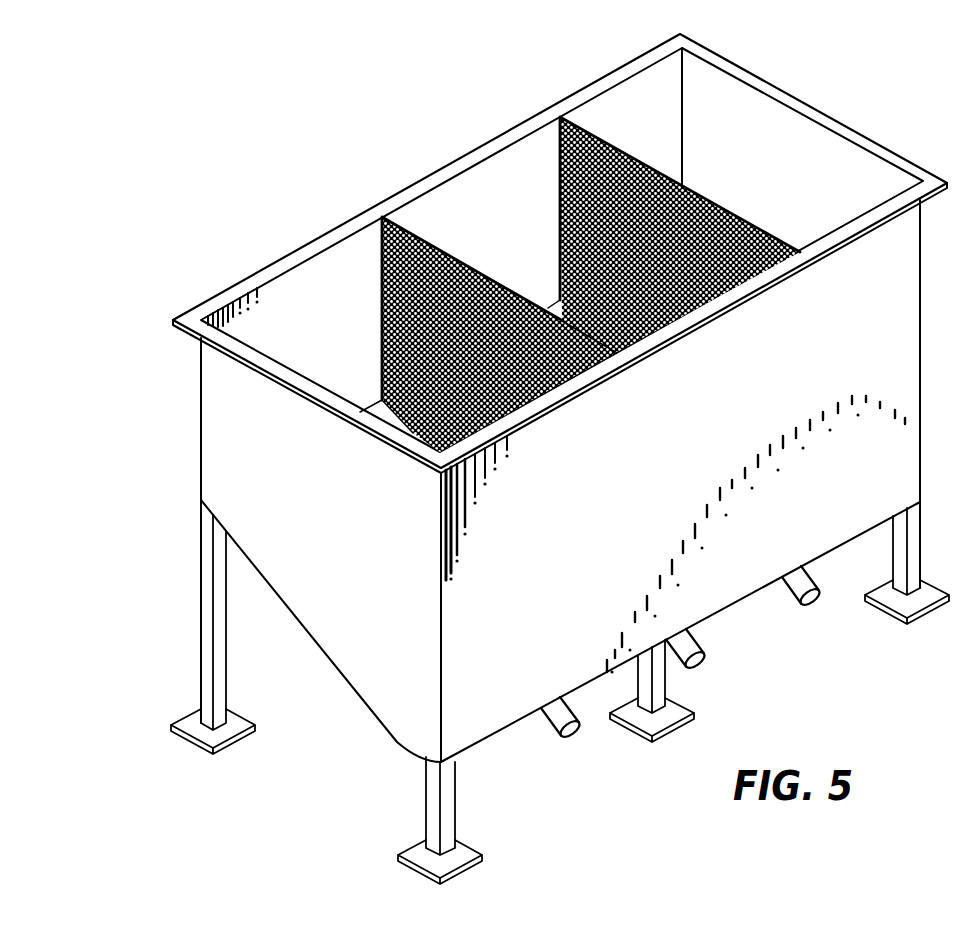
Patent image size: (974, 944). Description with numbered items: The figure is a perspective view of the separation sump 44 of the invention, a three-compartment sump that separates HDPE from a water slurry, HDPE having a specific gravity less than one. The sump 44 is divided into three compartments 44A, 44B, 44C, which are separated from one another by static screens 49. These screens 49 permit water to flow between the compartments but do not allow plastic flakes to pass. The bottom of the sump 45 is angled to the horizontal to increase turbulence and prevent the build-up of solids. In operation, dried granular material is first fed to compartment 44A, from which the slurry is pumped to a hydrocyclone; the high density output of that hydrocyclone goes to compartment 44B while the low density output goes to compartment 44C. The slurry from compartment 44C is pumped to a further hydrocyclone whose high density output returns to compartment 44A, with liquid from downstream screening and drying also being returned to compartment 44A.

The three-compartment sump 44 is at (182, 413).
The sump compartment 44A is at (805, 153).
The sump compartment 44B is at (477, 204).
The sump compartment 44C is at (288, 314).
The bottom of the sump 45 is at (337, 672).
The static screens 49 is at (557, 162).